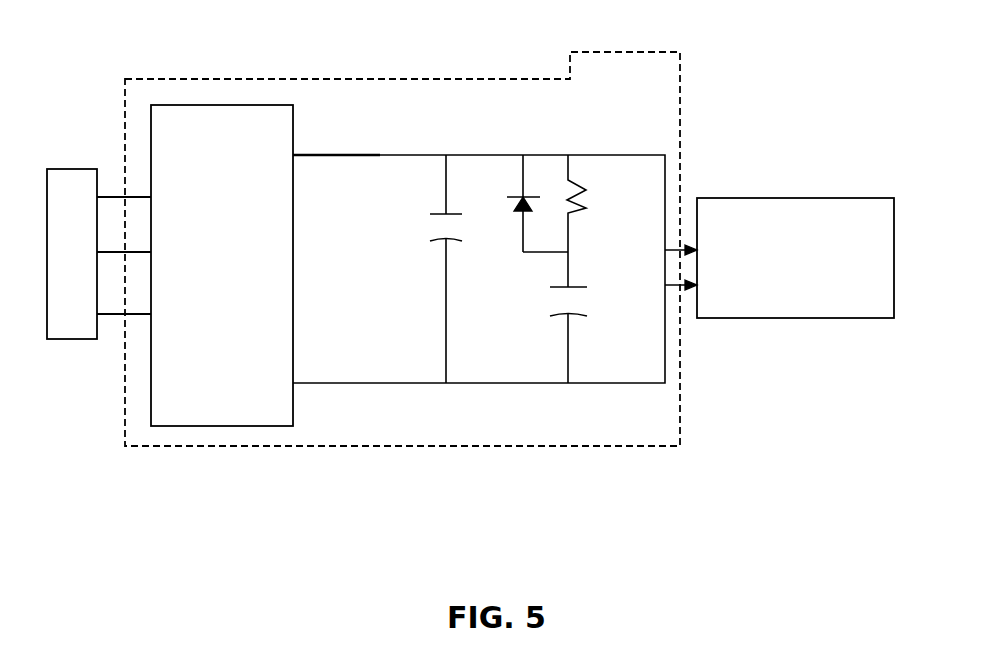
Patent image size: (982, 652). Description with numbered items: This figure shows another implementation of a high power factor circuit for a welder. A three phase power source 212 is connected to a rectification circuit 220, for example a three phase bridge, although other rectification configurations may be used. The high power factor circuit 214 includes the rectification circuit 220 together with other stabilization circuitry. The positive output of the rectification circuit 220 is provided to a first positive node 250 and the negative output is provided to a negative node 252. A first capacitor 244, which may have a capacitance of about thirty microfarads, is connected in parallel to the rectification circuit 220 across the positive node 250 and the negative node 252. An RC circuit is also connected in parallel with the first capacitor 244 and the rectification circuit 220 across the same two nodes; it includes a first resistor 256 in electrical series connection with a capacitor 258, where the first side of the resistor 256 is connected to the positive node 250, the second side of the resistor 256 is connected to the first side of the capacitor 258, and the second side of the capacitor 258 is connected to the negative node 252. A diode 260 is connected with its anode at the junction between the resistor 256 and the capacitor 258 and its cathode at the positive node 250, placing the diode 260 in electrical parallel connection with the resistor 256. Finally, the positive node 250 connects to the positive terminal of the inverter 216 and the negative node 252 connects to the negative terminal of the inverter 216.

The three phase power source 212 is at (82, 169).
The high power factor circuit 214 is at (313, 79).
The inverter 216 is at (804, 198).
The rectification circuit 220 is at (222, 105).
The first capacitor 244 is at (452, 241).
The first positive node 250 is at (550, 155).
The negative node 252 is at (568, 385).
The first resistor 256 is at (580, 180).
The capacitor 258 is at (578, 285).
The diode 260 is at (523, 195).